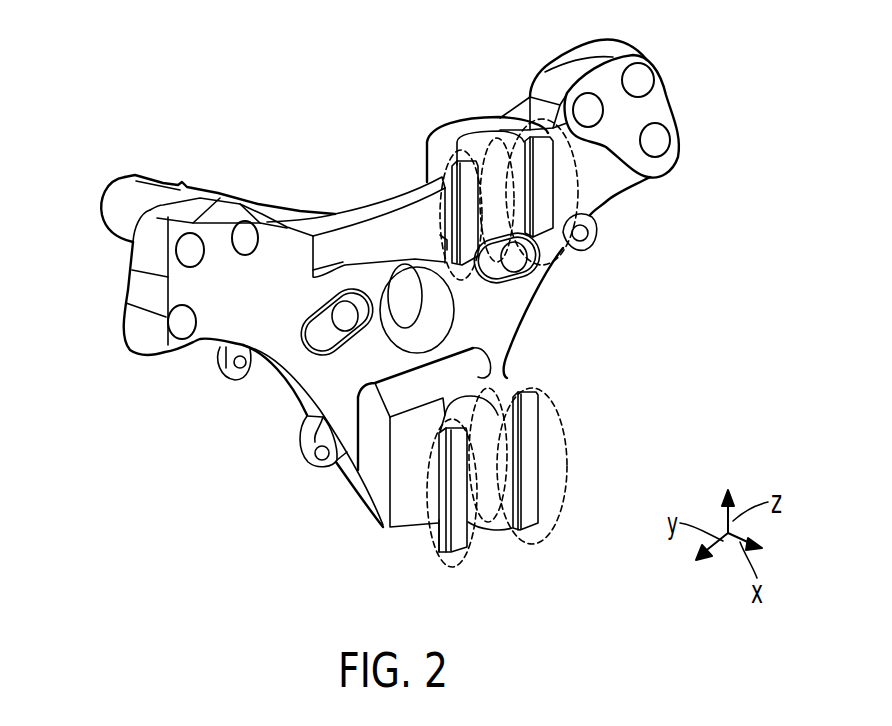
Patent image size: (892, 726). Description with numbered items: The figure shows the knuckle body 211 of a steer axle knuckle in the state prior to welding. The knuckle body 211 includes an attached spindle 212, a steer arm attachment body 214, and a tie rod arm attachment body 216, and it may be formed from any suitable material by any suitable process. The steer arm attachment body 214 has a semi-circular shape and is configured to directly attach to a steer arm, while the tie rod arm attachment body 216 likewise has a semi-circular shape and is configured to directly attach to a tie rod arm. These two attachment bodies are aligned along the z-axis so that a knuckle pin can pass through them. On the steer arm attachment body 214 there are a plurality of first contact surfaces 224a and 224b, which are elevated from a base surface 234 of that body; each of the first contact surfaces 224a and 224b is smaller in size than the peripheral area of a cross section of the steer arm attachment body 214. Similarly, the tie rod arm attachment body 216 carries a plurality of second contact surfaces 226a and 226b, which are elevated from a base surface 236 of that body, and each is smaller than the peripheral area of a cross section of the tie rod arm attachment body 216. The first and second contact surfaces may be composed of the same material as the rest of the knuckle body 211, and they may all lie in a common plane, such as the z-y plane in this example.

The knuckle body 211 is at (752, 186).
The spindle 212 is at (125, 197).
The steer arm attachment body 214 is at (440, 140).
The tie rod arm attachment body 216 is at (483, 407).
The first contact surface 224a is at (468, 213).
The first contact surface 224b is at (540, 212).
The second contact surface 226a is at (453, 500).
The second contact surface 226b is at (533, 475).
The base surface 234 is at (447, 240).
The base surface 236 is at (437, 535).